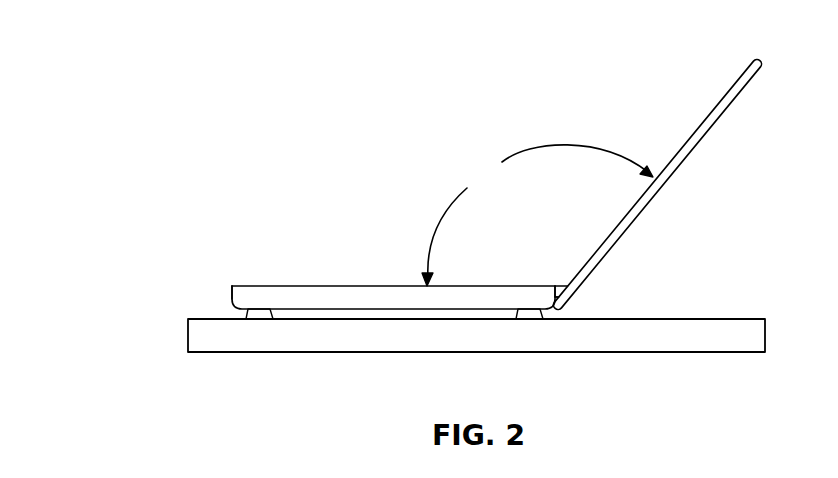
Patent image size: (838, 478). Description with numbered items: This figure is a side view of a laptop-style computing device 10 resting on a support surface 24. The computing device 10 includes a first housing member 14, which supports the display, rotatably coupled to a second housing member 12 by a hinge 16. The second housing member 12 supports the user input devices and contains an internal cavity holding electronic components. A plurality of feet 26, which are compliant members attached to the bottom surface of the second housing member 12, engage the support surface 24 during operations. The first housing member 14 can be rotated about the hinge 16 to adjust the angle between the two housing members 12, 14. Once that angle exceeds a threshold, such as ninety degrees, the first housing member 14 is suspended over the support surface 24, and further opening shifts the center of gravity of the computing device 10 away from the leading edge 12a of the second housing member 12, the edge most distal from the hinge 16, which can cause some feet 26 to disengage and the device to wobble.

The computing device 10 is at (310, 78).
The second housing member 12 is at (333, 285).
The leading edge 12a is at (232, 290).
The first housing member 14 is at (737, 100).
The hinge 16 is at (577, 293).
The support surface 24 is at (740, 318).
The feet 26 is at (248, 319).